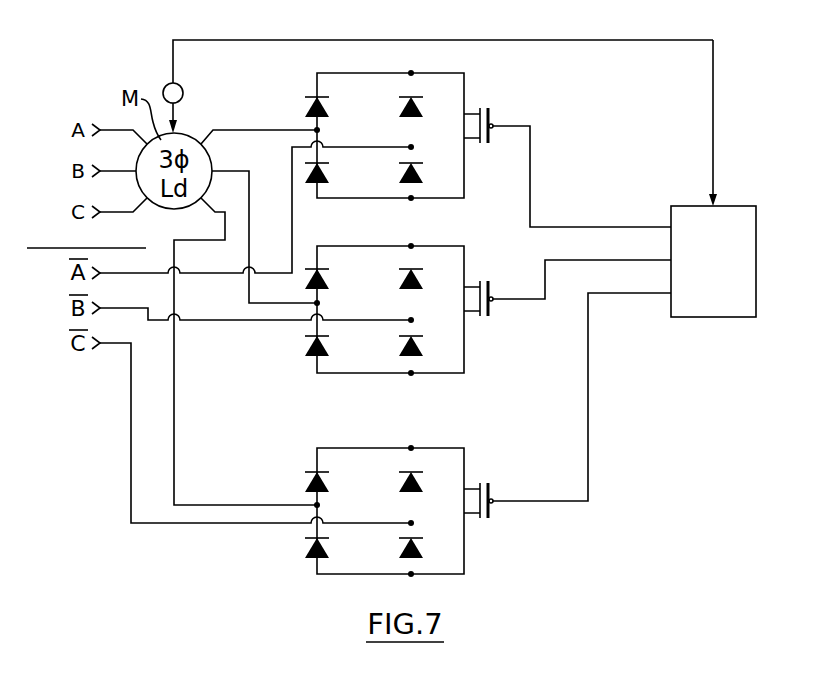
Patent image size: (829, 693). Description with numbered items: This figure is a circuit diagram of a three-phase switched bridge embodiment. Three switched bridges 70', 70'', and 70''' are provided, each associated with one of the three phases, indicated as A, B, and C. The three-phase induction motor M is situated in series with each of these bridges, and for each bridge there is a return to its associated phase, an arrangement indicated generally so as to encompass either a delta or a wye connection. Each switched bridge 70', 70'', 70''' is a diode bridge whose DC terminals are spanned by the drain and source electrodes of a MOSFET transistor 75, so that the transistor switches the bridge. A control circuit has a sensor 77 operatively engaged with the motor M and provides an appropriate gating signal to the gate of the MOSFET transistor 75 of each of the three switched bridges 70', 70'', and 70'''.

The sensor 77 is at (183, 93).
The MOSFET transistor 75 is at (738, 206).
The first switched bridge 70' is at (488, 148).
The second switched bridge 70'' is at (488, 317).
The third switched bridge 70''' is at (488, 442).